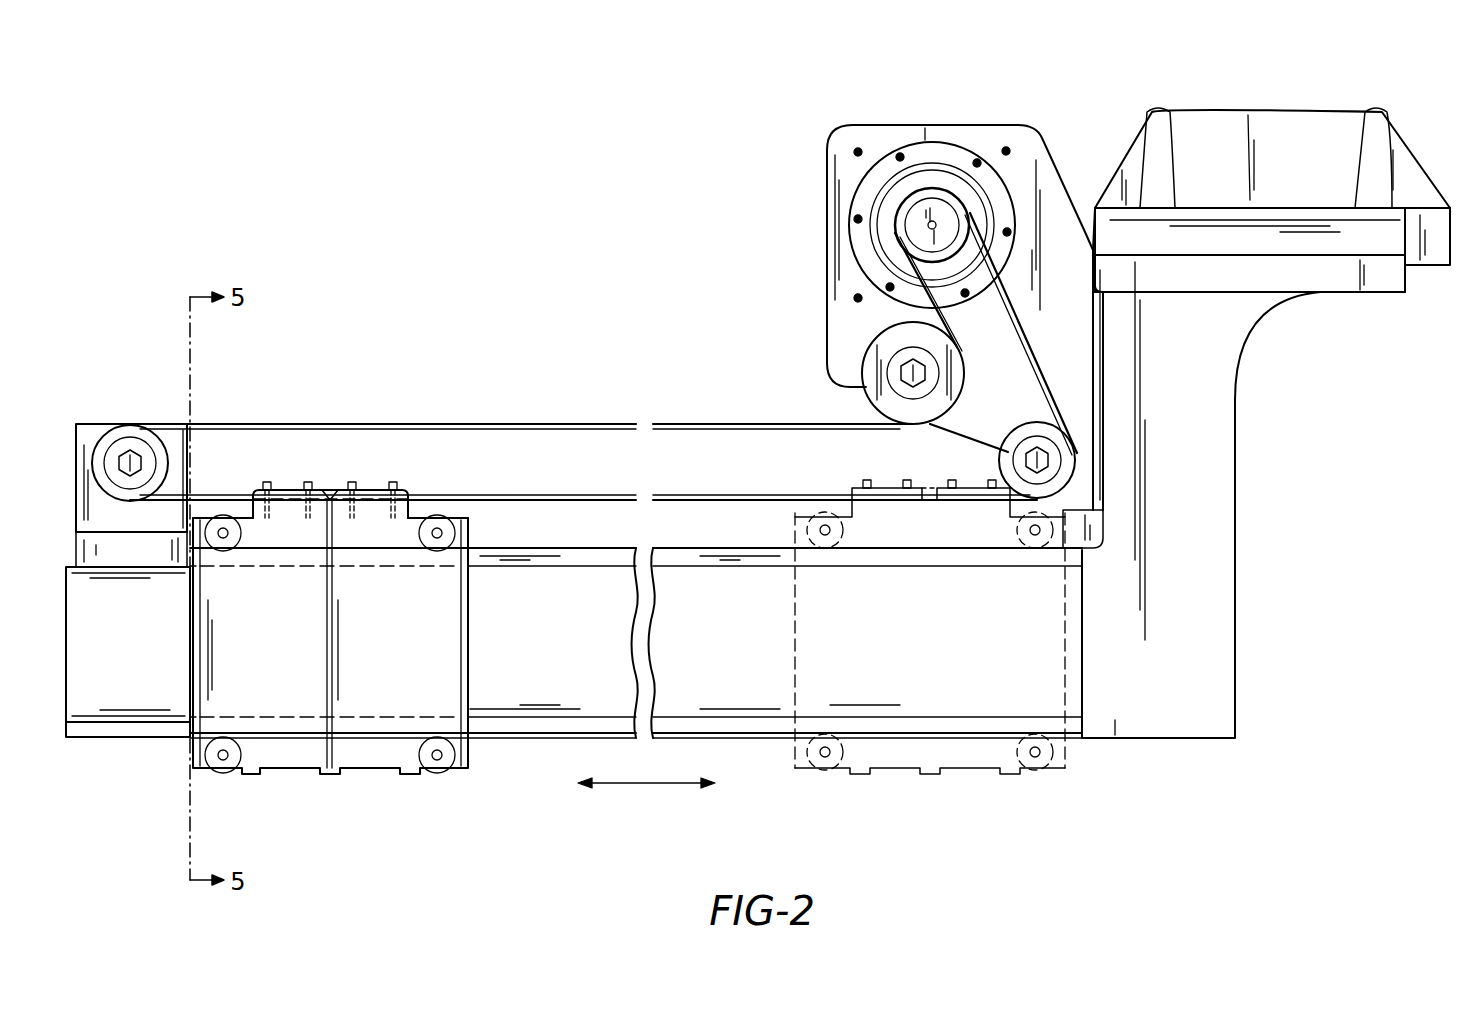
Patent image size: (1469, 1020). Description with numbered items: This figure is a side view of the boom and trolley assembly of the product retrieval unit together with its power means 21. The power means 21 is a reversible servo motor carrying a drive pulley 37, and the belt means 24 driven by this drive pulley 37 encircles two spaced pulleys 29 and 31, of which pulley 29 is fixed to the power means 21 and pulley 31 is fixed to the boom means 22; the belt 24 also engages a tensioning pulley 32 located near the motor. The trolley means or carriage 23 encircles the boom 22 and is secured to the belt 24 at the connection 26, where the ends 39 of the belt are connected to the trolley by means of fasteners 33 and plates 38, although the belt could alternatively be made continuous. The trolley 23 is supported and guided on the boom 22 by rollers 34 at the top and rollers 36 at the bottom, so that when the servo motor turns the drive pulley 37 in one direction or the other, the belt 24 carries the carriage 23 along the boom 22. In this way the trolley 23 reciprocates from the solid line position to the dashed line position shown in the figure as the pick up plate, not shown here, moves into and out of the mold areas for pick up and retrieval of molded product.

The power means 21 is at (826, 205).
The boom means 22 is at (532, 648).
The trolley means or carriage 23 is at (367, 673).
The belt means 24 is at (572, 423).
The belt connection 26 is at (288, 522).
The pulley 29 is at (1018, 430).
The pulley 31 is at (160, 440).
The tensioning pulley 32 is at (862, 398).
The fasteners 33 is at (263, 480).
The rollers 34 is at (222, 515).
The rollers 36 is at (218, 772).
The drive pulley 37 is at (943, 213).
The plates 38 is at (372, 488).
The belt ends 39 is at (330, 488).